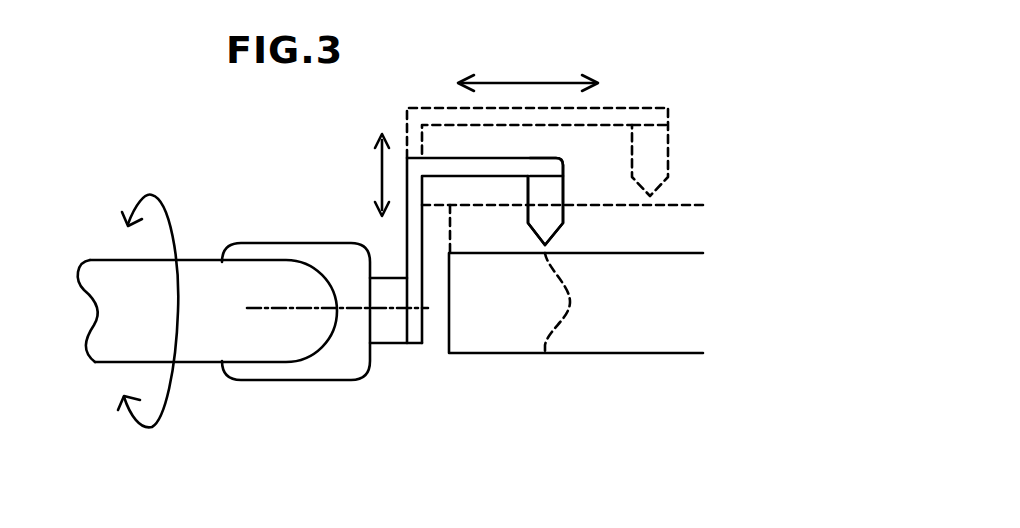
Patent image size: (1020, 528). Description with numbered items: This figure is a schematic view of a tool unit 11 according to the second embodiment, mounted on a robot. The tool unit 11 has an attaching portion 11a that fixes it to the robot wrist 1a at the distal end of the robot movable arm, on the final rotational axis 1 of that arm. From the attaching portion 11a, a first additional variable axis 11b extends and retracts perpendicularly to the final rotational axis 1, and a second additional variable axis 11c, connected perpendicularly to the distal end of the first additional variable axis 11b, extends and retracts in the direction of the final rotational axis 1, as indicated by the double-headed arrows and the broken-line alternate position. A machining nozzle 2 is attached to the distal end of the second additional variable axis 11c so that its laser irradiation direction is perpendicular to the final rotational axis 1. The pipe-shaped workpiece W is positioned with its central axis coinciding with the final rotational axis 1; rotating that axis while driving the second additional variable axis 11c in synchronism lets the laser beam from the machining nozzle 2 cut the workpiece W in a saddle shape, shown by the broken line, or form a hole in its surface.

The final rotational axis 1 is at (262, 310).
The robot wrist 1a is at (346, 358).
The tool unit 11 is at (358, 157).
The attaching portion 11a is at (386, 330).
The first additional variable axis 11b is at (407, 249).
The second additional variable axis 11c is at (553, 166).
The machining nozzle 2 is at (553, 221).
The workpiece W is at (603, 338).